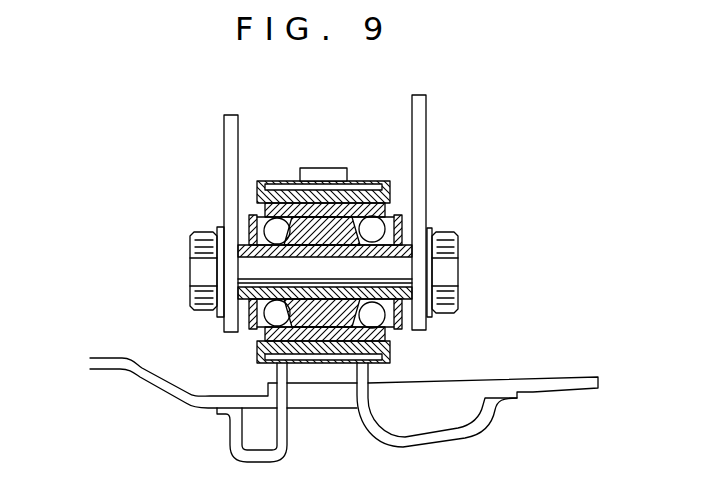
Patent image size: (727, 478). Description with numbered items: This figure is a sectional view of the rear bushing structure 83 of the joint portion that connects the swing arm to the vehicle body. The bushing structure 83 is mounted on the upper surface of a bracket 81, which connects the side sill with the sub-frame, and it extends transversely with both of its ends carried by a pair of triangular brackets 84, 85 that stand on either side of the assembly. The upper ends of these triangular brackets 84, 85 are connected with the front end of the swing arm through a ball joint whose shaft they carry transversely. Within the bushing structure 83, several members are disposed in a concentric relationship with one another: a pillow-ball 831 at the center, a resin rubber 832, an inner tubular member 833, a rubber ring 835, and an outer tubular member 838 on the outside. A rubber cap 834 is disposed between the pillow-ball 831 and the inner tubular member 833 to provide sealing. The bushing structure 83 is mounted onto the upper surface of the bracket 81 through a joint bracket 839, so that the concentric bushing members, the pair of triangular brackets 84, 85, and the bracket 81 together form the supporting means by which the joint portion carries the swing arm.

The bracket 81 is at (492, 385).
The bushing structure 83 is at (222, 189).
The triangular bracket 84 is at (224, 135).
The triangular bracket 85 is at (426, 125).
The pillow-ball 831 is at (300, 255).
The resin rubber 832 is at (350, 236).
The inner tubular member 833 is at (380, 222).
The rubber cap 834 is at (256, 224).
The rubber ring 835 is at (360, 197).
The outer tubular member 838 is at (285, 184).
The joint bracket 839 is at (320, 168).